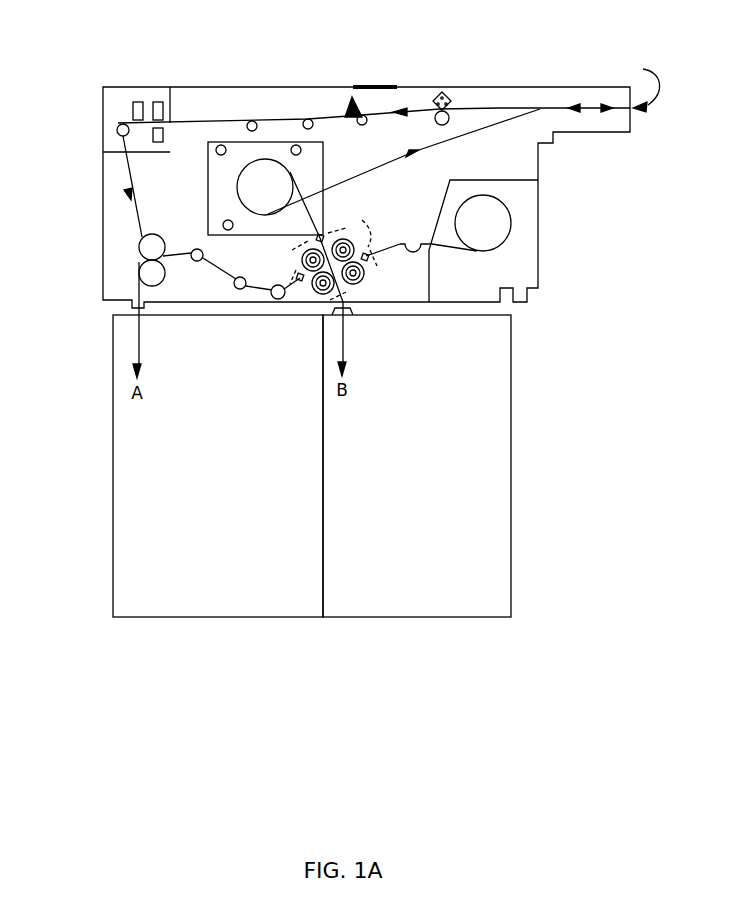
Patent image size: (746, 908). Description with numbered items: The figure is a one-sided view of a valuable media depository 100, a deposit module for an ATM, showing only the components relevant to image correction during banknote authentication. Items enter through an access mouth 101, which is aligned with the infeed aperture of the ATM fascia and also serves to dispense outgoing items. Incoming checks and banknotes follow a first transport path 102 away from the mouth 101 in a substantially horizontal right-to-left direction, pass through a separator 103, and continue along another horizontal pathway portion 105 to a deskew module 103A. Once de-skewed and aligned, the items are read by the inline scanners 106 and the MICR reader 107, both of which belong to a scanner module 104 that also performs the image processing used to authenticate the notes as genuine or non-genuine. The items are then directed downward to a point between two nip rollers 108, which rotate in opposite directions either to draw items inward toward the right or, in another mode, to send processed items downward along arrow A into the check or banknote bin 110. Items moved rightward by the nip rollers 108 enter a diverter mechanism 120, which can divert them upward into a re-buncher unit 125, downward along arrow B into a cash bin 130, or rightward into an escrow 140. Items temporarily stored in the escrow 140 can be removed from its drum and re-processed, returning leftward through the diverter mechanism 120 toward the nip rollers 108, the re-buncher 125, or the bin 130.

The valuable media depository 100 is at (237, 87).
The access mouth 101 is at (614, 87).
The first transport path 102 is at (502, 107).
The separator 103 is at (435, 97).
The deskew module 103A is at (352, 97).
The scanner module 104 is at (125, 112).
The pathway portion 105 is at (278, 120).
The inline scanners 106 is at (159, 101).
The MICR reader 107 is at (138, 100).
The nip rollers 108 is at (158, 271).
The check or banknote bin 110 is at (204, 497).
The diverter mechanism 120 is at (353, 236).
The re-buncher unit 125 is at (326, 170).
The cash bin 130 is at (394, 497).
The escrow 140 is at (531, 225).